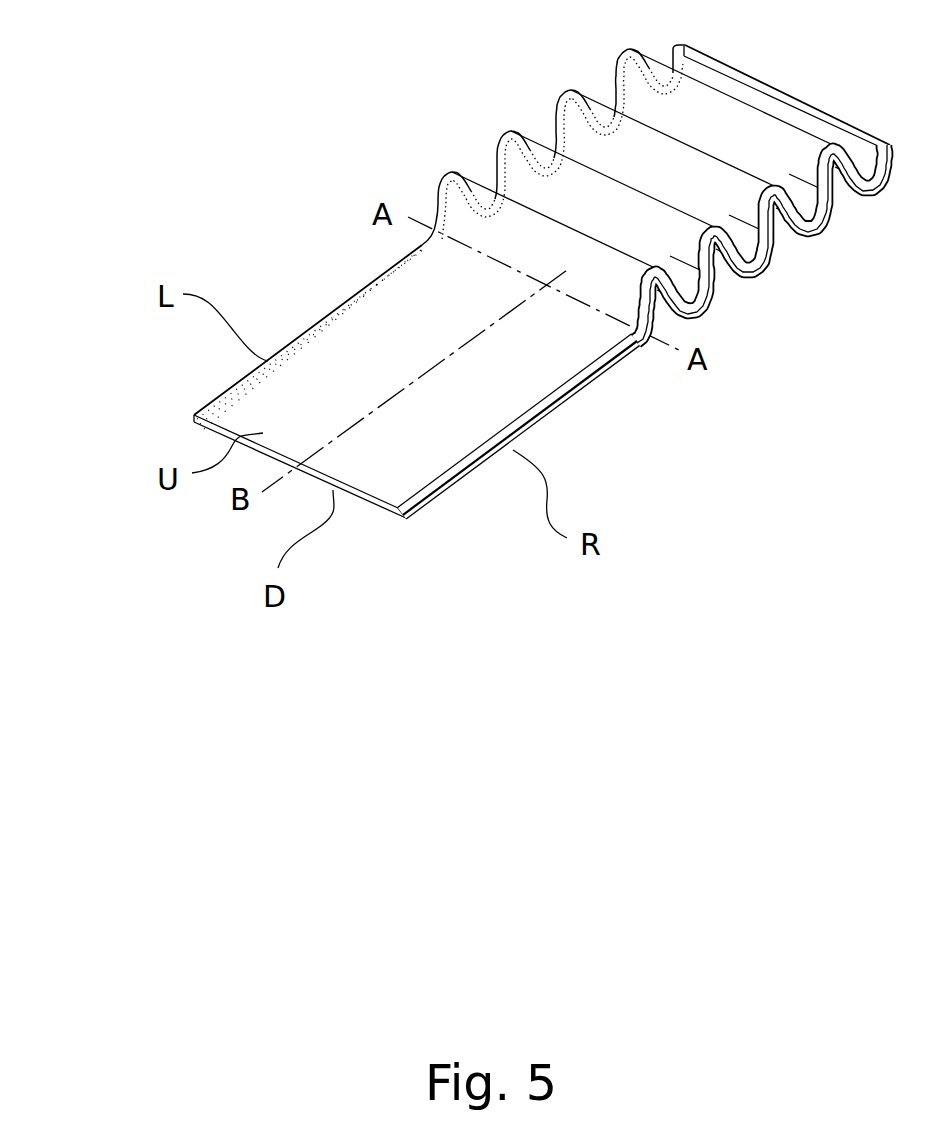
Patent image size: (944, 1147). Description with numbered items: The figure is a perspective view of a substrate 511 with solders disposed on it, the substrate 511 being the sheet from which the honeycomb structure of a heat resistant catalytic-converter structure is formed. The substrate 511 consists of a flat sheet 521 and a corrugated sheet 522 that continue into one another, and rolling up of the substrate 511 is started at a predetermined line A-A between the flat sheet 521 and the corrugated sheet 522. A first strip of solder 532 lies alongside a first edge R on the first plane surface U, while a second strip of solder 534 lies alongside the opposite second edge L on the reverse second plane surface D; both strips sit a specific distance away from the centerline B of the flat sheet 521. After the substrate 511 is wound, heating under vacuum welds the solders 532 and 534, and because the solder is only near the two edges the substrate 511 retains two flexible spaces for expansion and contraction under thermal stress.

The substrate 511 is at (465, 333).
The flat sheet 521 is at (233, 433).
The corrugated sheet 522 is at (713, 280).
The first strip of solder 532 is at (400, 517).
The second strip of solder 534 is at (194, 421).